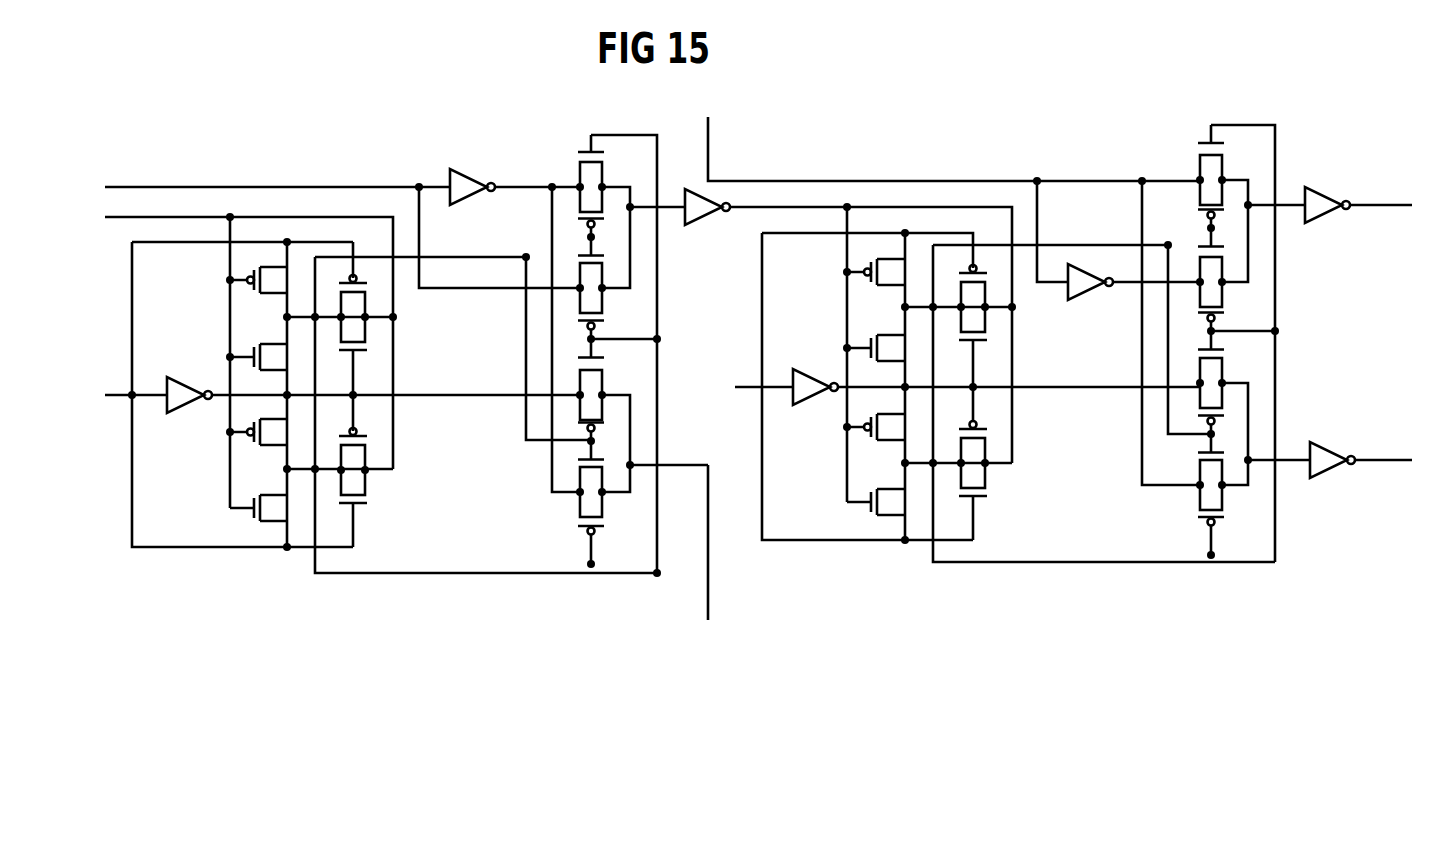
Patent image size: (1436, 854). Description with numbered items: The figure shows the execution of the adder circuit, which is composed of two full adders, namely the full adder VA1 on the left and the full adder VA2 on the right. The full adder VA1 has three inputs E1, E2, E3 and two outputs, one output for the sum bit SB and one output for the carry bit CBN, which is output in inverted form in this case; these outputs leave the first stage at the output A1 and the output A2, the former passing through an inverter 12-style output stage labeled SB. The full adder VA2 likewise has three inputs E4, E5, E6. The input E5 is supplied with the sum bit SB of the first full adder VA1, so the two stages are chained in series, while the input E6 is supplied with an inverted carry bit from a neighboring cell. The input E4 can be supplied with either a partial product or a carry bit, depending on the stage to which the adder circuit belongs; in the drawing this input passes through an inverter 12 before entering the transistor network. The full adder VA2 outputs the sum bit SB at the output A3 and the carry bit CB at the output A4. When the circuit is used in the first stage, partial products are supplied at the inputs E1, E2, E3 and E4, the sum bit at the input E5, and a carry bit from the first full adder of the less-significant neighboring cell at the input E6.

The inverter 12 is at (815, 374).
The input E1 is at (333, 388).
The input E2 is at (219, 243).
The input E3 is at (342, 180).
The input E4 is at (962, 375).
The input E5 is at (795, 207).
The input E6 is at (953, 151).
The output A1 is at (660, 233).
The output A2 is at (669, 450).
The output A3 is at (1332, 186).
The output A4 is at (1330, 441).
The sum bit SB is at (730, 211).
The carry bit CB is at (1336, 476).
The carry bit CBN is at (708, 592).
The full adder VA1 is at (397, 552).
The full adder VA2 is at (1037, 548).